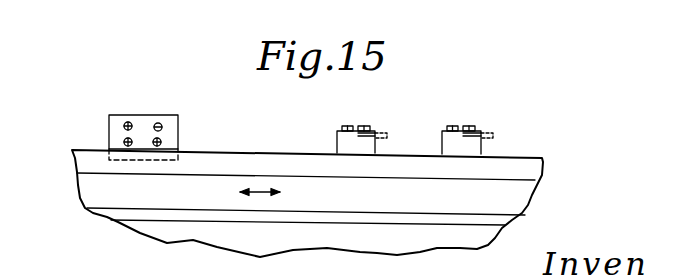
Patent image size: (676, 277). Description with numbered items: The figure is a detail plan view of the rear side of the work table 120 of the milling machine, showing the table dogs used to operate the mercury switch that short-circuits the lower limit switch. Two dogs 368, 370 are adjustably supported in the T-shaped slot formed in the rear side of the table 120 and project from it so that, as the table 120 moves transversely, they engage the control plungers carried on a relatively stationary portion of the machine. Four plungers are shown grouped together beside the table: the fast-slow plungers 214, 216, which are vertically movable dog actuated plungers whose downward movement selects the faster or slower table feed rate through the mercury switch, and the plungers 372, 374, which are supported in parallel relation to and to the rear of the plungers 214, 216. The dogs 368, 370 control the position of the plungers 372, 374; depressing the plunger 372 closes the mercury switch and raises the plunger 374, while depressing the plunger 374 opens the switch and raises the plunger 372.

The work table 120 is at (517, 198).
The dog actuated plunger 214 is at (123, 141).
The dog actuated plunger 216 is at (162, 142).
The plunger 372 is at (125, 120).
The plunger 374 is at (162, 128).
The dog 368 is at (375, 131).
The dog 370 is at (482, 131).